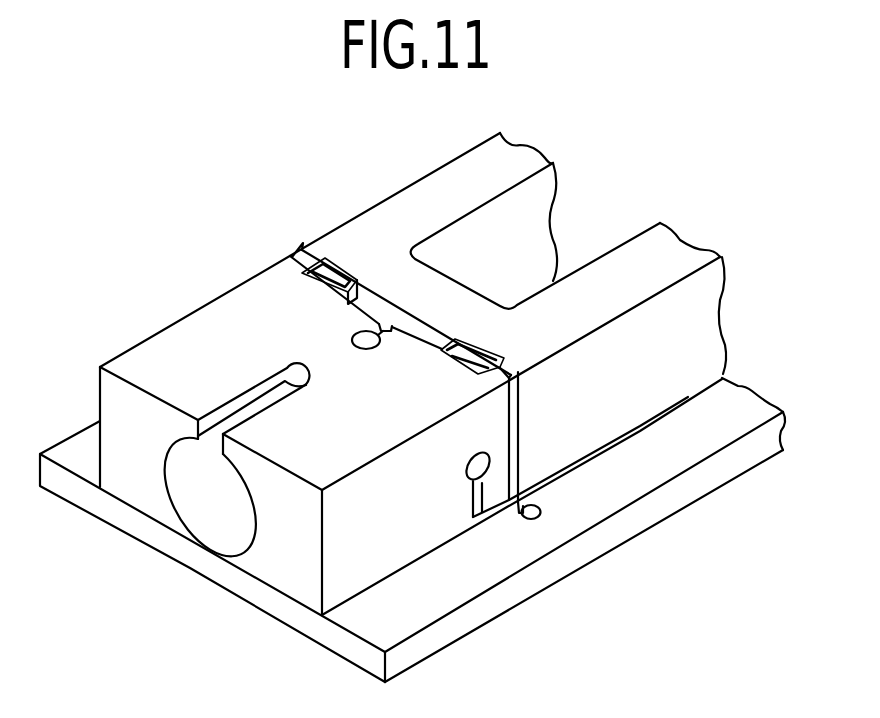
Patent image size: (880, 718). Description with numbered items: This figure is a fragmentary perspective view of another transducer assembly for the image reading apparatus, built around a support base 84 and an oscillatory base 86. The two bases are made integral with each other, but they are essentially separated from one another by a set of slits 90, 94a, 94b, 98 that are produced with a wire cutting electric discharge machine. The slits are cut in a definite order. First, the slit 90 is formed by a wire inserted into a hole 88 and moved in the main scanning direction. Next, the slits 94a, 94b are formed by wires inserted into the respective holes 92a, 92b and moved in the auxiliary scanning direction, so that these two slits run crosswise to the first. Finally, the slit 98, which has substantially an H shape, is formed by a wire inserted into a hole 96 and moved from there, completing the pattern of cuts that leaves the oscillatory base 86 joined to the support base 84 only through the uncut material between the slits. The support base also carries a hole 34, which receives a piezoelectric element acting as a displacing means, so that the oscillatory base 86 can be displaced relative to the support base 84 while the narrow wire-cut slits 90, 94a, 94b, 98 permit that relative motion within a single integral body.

The hole 34 is at (217, 527).
The support base 84 is at (651, 469).
The oscillatory base 86 is at (703, 300).
The hole 88 is at (468, 466).
The slit 90 is at (687, 393).
The hole 92a is at (540, 516).
The hole 92b is at (636, 685).
The slit 94a is at (518, 443).
The slit 94b is at (308, 248).
The hole 96 is at (358, 333).
The slit 98 is at (381, 302).